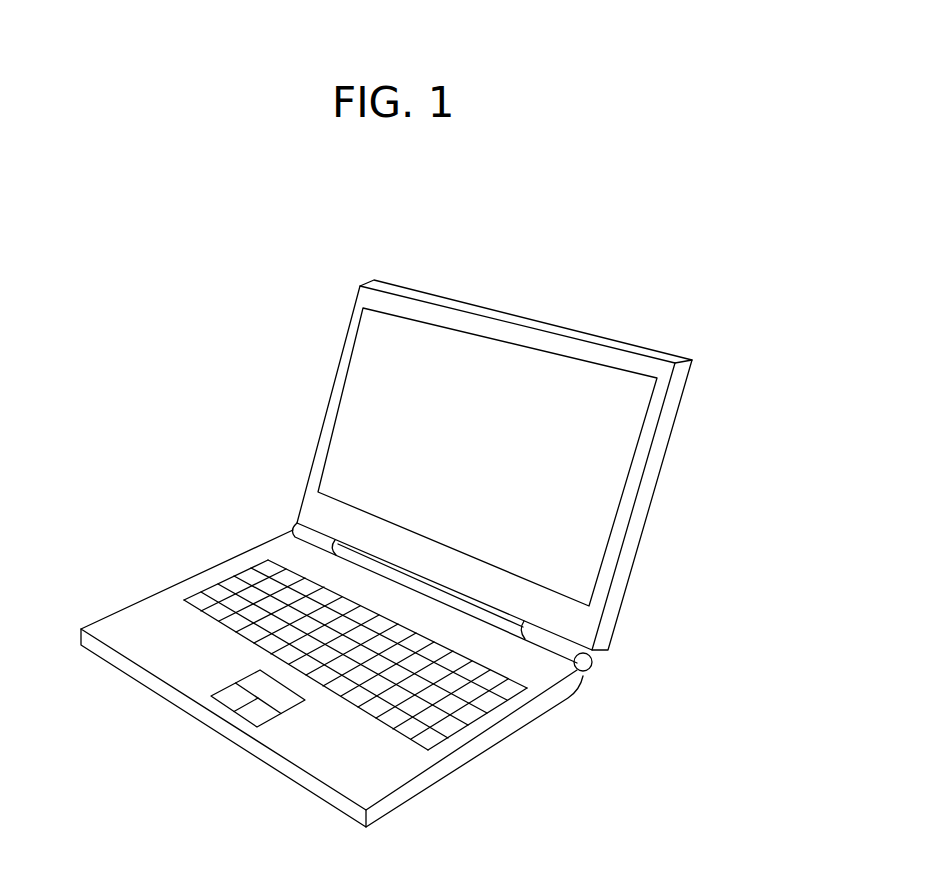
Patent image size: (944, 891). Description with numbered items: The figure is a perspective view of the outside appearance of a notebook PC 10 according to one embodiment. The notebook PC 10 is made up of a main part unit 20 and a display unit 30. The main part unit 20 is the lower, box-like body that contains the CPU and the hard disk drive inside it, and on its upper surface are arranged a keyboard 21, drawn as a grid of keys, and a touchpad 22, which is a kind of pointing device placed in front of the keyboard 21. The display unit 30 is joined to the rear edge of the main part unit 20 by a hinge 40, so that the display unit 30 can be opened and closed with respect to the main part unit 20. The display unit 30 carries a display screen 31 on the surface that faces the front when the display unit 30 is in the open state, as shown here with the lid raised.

The notebook PC 10 is at (170, 408).
The main part unit 20 is at (146, 574).
The keyboard 21 is at (257, 594).
The touchpad 22 is at (250, 693).
The display unit 30 is at (312, 296).
The display screen 31 is at (620, 405).
The hinge 40 is at (566, 634).